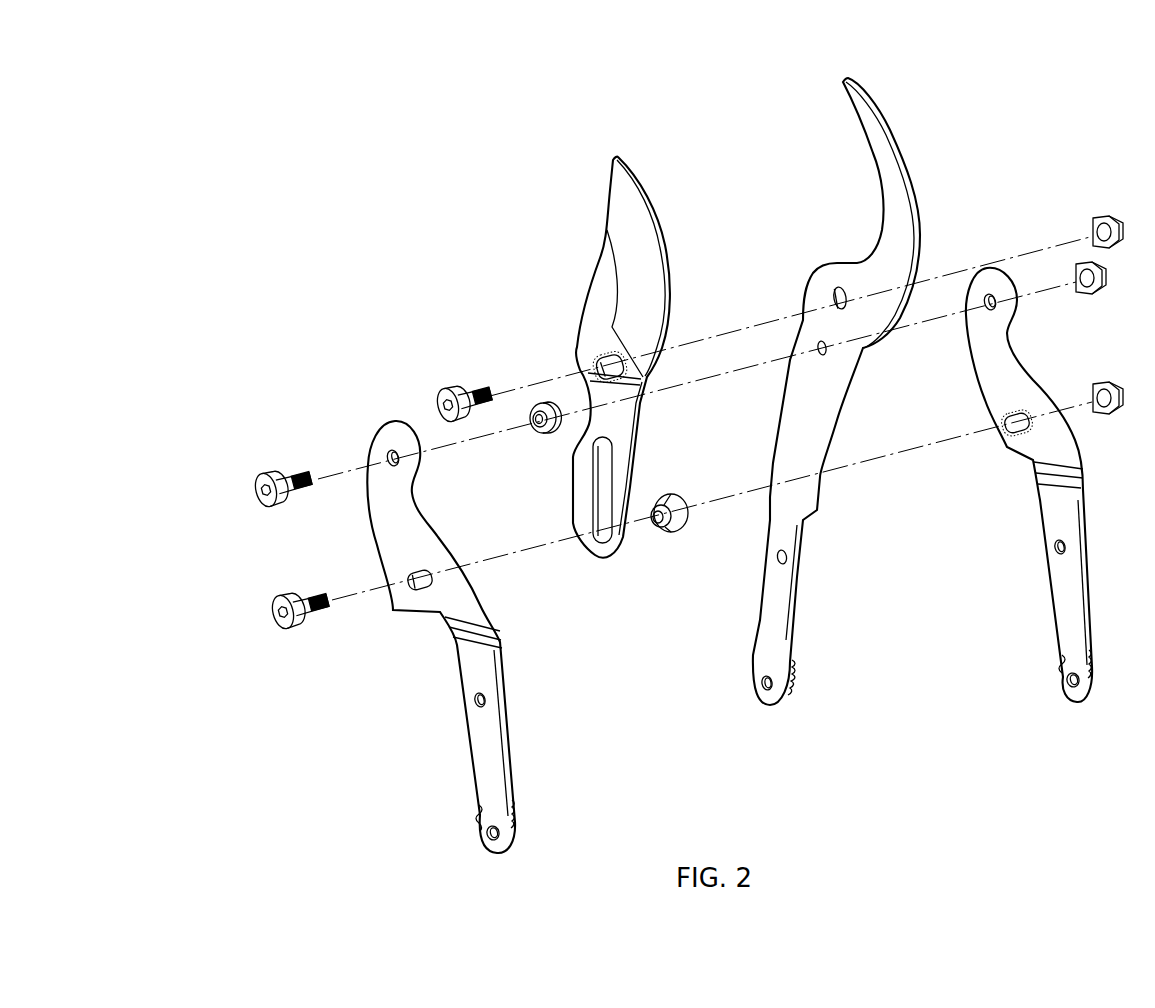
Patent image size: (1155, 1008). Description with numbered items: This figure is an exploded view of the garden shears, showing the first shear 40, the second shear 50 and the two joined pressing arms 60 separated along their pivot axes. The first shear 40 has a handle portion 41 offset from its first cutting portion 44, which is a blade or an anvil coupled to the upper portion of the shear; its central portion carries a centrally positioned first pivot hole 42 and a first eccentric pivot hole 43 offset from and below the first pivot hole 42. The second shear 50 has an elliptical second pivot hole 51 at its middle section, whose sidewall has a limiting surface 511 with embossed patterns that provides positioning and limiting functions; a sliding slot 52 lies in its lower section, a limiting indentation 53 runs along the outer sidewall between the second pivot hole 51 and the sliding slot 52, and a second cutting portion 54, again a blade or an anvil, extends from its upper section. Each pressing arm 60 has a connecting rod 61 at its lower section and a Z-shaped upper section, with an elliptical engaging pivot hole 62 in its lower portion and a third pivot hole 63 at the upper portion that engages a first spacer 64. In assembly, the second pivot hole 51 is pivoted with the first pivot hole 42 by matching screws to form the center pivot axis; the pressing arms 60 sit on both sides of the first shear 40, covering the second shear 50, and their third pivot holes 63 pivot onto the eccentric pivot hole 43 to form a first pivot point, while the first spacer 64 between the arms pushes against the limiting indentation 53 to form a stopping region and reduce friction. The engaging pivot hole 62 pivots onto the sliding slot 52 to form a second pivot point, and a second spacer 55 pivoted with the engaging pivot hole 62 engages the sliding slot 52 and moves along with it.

The first shear 40 is at (862, 408).
The handle portion 41 is at (780, 620).
The first pivot hole 42 is at (832, 299).
The first eccentric pivot hole 43 is at (817, 348).
The first cutting portion 44 is at (877, 146).
The second shear 50 is at (570, 367).
The second pivot hole 51 is at (587, 356).
The limiting surface 511 is at (598, 366).
The sliding slot 52 is at (580, 545).
The limiting indentation 53 is at (548, 402).
The second cutting portion 54 is at (650, 224).
The second spacer 55 is at (670, 533).
The pressing arm 60 is at (443, 734).
The connecting rod 61 is at (493, 773).
The engaging pivot hole 62 is at (422, 588).
The third pivot hole 63 is at (385, 458).
The first spacer 64 is at (541, 428).